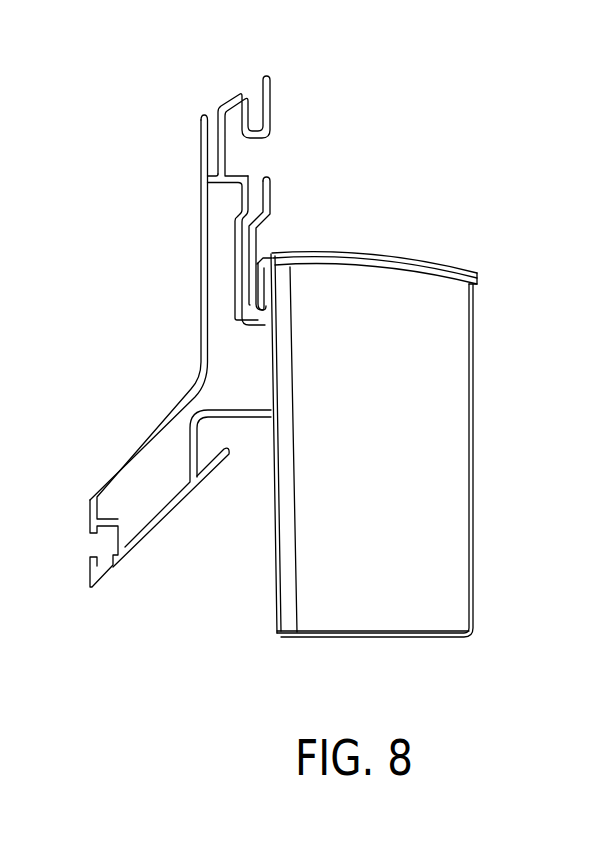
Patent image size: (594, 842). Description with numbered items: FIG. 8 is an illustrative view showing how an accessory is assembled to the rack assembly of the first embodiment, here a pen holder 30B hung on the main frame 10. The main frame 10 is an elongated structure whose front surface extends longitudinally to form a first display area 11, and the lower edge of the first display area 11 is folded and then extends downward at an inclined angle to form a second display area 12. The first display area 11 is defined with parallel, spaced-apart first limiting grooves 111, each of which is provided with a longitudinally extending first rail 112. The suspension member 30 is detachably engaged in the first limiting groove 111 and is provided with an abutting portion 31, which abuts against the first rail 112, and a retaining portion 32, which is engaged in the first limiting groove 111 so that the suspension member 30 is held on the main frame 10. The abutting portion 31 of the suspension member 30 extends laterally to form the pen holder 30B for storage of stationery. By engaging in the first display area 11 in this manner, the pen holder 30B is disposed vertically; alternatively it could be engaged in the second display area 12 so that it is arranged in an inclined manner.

The main frame 10 is at (160, 188).
The first display area 11 is at (282, 117).
The first limiting groove 111 is at (252, 262).
The first rail 112 is at (262, 304).
The second display area 12 is at (168, 538).
The suspension member 30 is at (305, 232).
The abutting portion 31 is at (273, 322).
The retaining portion 32 is at (262, 292).
The pen holder 30B is at (390, 493).